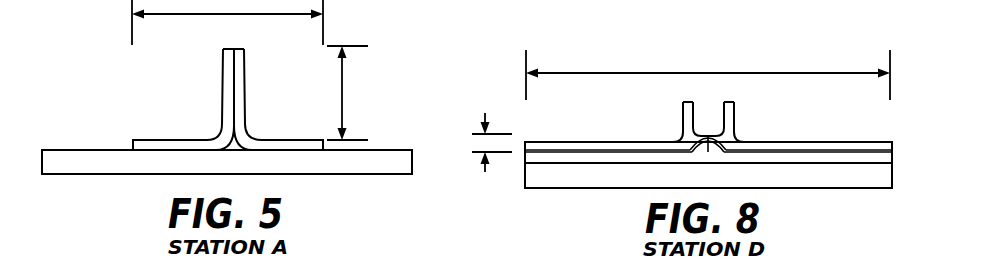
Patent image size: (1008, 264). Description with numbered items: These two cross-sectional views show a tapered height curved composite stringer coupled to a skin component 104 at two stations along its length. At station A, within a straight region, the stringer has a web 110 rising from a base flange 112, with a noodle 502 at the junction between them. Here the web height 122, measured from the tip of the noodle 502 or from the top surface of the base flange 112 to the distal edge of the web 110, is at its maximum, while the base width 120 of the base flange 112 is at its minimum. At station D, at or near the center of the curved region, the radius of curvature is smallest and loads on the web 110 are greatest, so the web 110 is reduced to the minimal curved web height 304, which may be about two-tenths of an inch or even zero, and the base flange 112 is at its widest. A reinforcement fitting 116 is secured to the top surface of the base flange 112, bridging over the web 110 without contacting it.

In FIG. 5, the skin component 104 is at (99, 157).
In FIG. 5, the web 110 is at (221, 97).
In FIG. 5, the base flange 112 is at (183, 142).
In FIG. 5, the noodle 502 is at (231, 146).
In FIG. 5, the base width 120 is at (227, 22).
In FIG. 8, the base width 120 is at (708, 75).
In FIG. 5, the web height 122 is at (354, 93).
In FIG. 8, the web height 122 is at (489, 117).
In FIG. 8, the reinforcement fitting 116 is at (681, 145).
In FIG. 8, the curved web height 304 is at (491, 121).